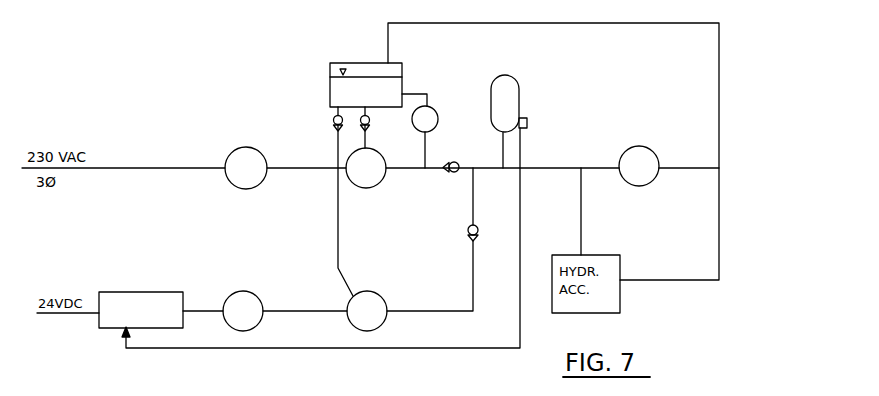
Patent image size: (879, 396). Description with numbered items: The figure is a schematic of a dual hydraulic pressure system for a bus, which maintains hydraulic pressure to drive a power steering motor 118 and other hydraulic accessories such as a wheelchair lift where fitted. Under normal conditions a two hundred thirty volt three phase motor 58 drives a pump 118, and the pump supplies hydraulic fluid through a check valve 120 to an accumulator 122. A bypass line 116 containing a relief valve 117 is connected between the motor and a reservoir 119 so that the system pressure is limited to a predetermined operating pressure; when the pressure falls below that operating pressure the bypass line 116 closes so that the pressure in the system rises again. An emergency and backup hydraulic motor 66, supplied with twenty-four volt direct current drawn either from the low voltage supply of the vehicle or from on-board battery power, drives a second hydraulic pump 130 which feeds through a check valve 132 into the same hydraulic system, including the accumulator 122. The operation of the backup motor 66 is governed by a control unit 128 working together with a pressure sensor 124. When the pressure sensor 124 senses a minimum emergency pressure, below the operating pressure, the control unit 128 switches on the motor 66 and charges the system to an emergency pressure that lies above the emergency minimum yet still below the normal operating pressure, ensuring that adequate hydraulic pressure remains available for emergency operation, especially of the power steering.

The three phase motor 58 is at (252, 148).
The reservoir 119 is at (330, 63).
The bypass line 116 is at (427, 94).
The relief valve 117 is at (435, 108).
The pump 118 is at (356, 187).
The check valve 120 is at (450, 163).
The accumulator 122 is at (512, 95).
The pressure sensor 124 is at (527, 124).
The check valve 132 is at (468, 230).
The control unit 128 is at (138, 262).
The emergency and backup hydraulic motor 66 is at (244, 291).
The second hydraulic pump 130 is at (372, 291).